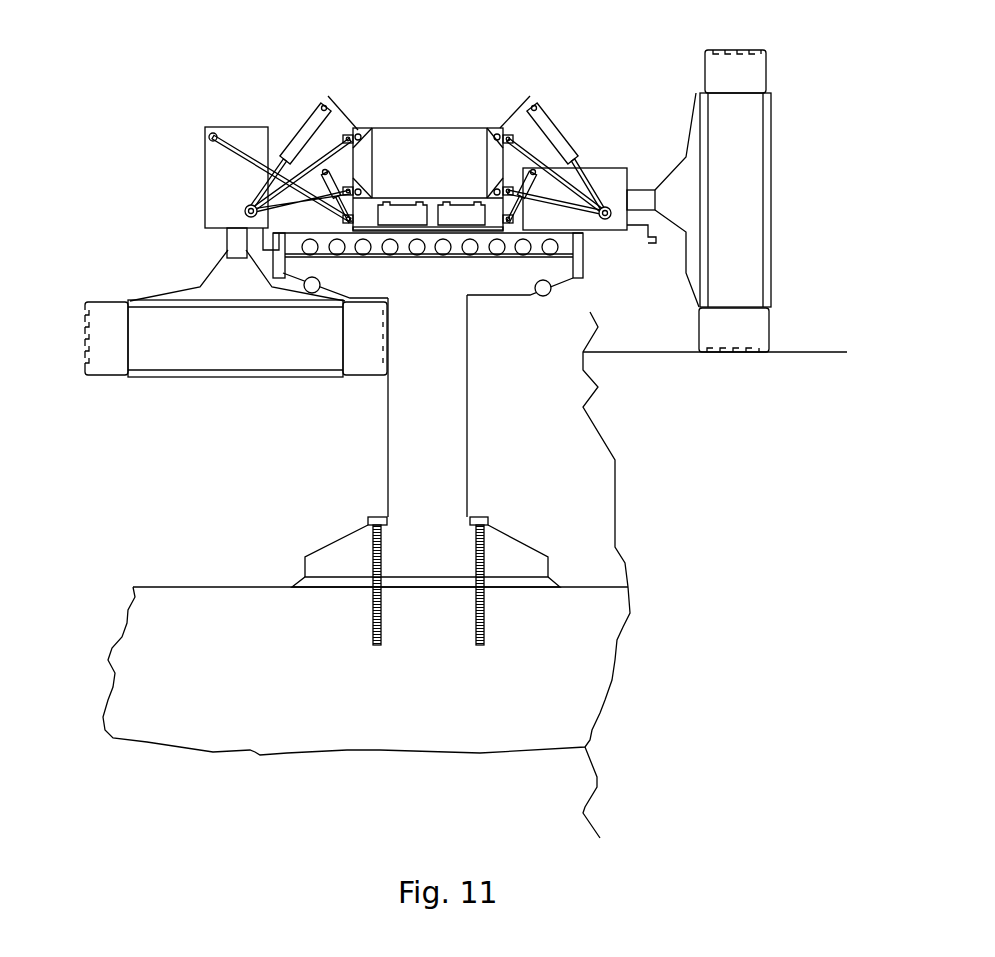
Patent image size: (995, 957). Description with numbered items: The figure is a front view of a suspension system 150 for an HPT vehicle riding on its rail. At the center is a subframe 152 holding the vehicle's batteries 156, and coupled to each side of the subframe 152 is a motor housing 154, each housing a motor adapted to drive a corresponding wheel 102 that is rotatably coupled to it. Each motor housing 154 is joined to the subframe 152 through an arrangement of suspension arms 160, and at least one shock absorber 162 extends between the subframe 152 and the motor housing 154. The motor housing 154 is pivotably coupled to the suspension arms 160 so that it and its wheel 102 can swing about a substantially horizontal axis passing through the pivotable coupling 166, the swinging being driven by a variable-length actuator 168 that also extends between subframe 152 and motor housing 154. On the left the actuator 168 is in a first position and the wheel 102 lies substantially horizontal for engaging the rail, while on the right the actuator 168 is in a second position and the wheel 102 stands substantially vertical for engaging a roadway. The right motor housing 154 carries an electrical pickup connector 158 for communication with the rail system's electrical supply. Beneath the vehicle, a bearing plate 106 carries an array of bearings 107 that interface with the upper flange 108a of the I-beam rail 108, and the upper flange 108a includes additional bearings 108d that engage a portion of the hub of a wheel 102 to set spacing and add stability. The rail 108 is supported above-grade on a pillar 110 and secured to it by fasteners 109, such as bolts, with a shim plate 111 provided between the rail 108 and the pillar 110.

The suspension system 150 is at (153, 43).
The subframe 152 is at (428, 130).
The motor housing 154 is at (240, 128).
The battery 156 is at (458, 208).
The electrical pickup connector 158 is at (650, 233).
The suspension arm 160 is at (327, 150).
The shock absorber 162 is at (303, 130).
The pivotable coupling 166 is at (243, 208).
The variable-length actuator 168 is at (243, 160).
The wheel 102 is at (155, 377).
The bearing plate 106 is at (475, 258).
The bearing 107 is at (337, 254).
The rail 108 is at (388, 432).
The upper flange 108a is at (448, 290).
The additional bearing 108d is at (548, 297).
The fastener 109 is at (373, 557).
The pillar 110 is at (178, 618).
The shim plate 111 is at (293, 583).